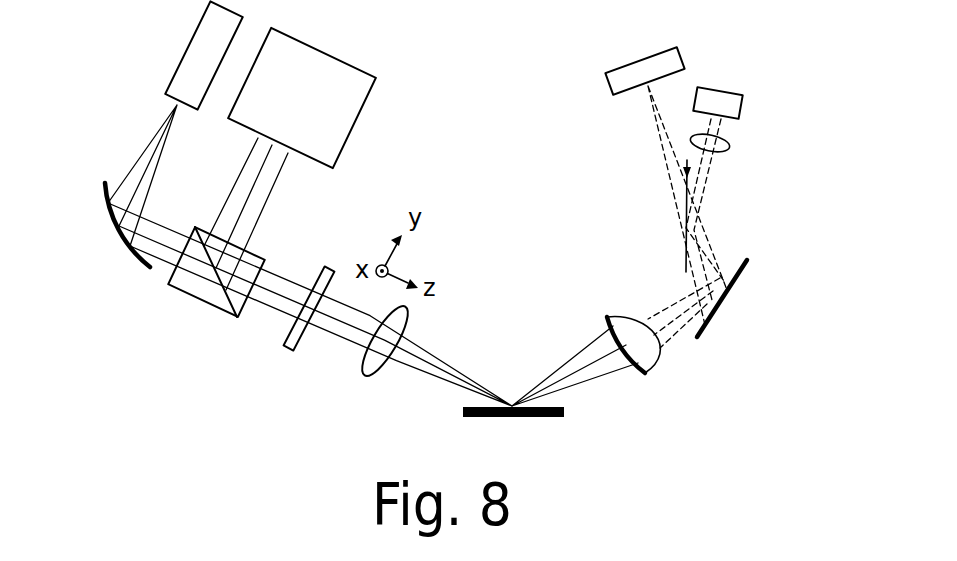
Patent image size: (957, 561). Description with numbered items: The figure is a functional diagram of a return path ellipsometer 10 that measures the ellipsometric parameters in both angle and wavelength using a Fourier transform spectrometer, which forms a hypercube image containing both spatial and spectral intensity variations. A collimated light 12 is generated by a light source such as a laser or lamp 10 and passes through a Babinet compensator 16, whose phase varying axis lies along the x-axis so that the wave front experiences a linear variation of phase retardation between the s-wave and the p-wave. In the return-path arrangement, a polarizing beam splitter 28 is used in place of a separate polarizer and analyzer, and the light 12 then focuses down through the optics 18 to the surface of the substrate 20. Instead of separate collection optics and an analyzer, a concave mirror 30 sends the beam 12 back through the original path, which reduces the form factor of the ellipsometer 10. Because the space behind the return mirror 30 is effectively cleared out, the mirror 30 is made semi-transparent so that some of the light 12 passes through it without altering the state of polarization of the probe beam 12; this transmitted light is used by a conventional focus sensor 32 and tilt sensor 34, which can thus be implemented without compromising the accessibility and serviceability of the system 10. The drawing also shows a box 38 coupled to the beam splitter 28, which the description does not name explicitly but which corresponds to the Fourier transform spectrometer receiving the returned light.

The ellipsometer 10 is at (186, 45).
The collimated light 12 is at (162, 262).
The Babinet compensator 16 is at (288, 348).
The optics 18 is at (365, 364).
The substrate 20 is at (540, 417).
The polarizing beam splitter 28 is at (202, 300).
The concave mirror 30 is at (657, 360).
The focus sensor 32 is at (685, 57).
The tilt sensor 34 is at (747, 107).
The spectrometer 38 is at (365, 107).